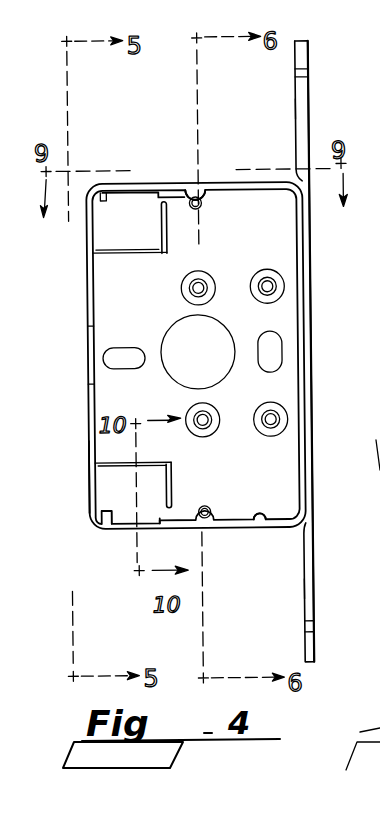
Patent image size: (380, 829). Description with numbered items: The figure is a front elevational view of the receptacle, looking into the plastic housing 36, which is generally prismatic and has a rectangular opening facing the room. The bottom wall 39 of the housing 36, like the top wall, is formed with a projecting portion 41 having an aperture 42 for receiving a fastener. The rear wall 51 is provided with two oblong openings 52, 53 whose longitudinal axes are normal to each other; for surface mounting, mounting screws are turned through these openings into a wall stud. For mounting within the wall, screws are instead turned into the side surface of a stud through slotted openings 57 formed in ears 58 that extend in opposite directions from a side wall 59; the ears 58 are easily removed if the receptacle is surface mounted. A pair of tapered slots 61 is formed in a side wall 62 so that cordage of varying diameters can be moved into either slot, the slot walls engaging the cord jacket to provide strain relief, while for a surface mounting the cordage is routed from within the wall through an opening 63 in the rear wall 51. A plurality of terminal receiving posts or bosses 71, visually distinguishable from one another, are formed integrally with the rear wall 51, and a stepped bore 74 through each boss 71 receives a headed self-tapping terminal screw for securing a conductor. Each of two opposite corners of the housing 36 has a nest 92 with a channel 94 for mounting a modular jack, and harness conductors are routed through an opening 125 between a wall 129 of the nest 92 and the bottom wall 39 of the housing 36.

The housing 36 is at (84, 272).
The bottom wall 39 is at (258, 518).
The projecting portion 41 is at (210, 213).
The aperture 42 is at (188, 198).
The rear wall 51 is at (283, 232).
The oblong opening 52 is at (279, 352).
The oblong opening 53 is at (124, 354).
The slotted opening 57 is at (298, 76).
The ear 58 is at (298, 112).
The side wall 59 is at (305, 447).
The tapered slot 61 is at (87, 384).
The side wall 62 is at (88, 450).
The opening 63 is at (182, 374).
The terminal receiving post or boss 71 is at (182, 290).
The stepped bore 74 is at (272, 288).
The nest 92 is at (143, 494).
The channel 94 is at (122, 514).
The opening 125 is at (182, 521).
The wall 129 is at (176, 484).